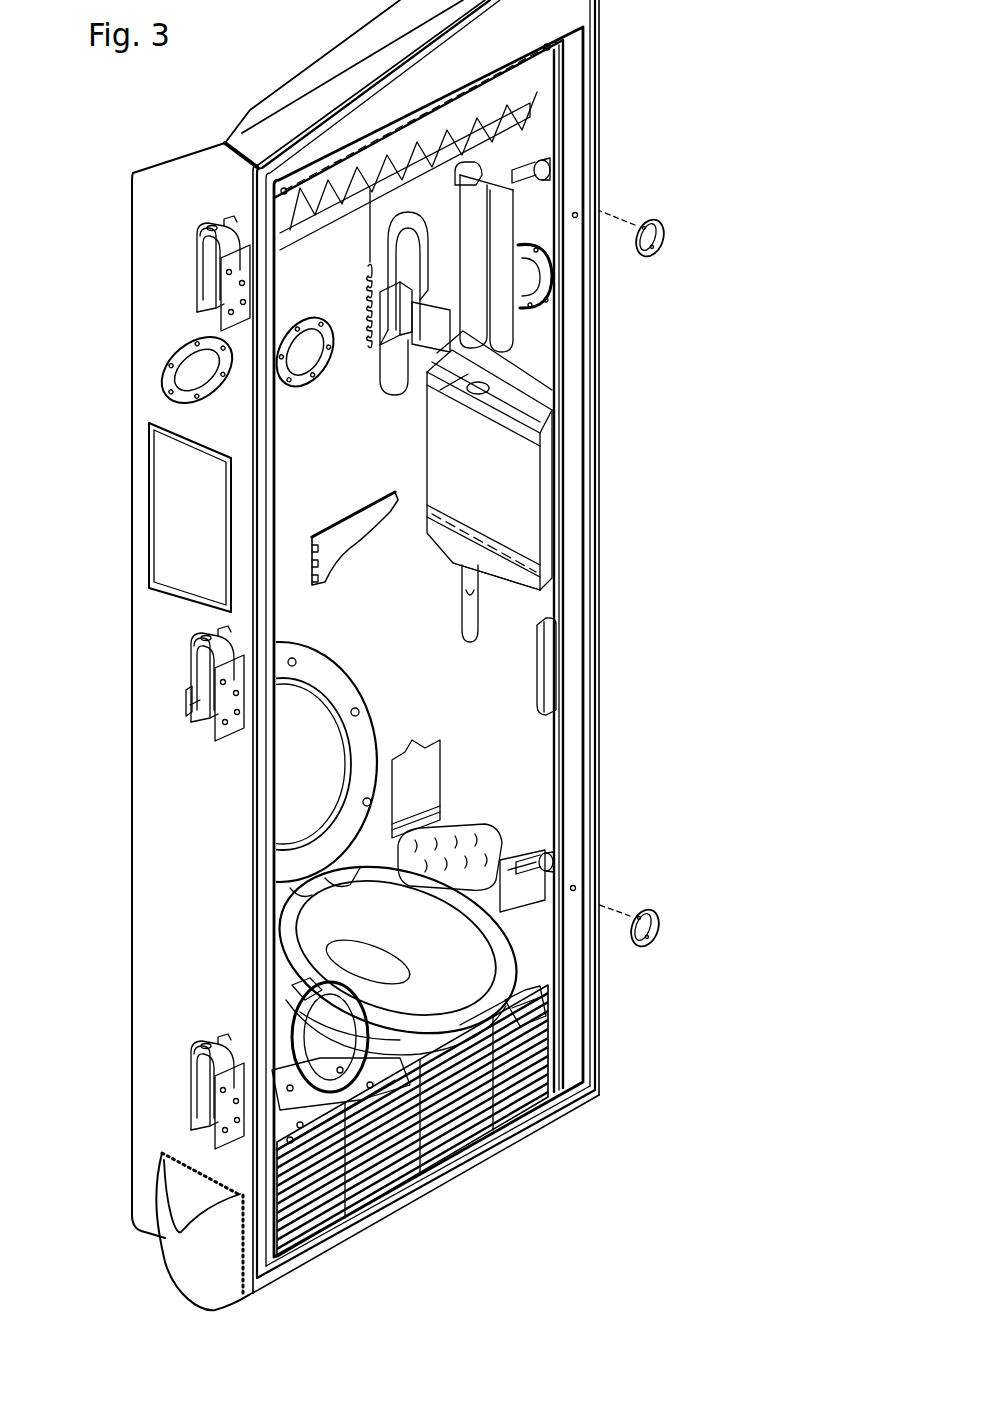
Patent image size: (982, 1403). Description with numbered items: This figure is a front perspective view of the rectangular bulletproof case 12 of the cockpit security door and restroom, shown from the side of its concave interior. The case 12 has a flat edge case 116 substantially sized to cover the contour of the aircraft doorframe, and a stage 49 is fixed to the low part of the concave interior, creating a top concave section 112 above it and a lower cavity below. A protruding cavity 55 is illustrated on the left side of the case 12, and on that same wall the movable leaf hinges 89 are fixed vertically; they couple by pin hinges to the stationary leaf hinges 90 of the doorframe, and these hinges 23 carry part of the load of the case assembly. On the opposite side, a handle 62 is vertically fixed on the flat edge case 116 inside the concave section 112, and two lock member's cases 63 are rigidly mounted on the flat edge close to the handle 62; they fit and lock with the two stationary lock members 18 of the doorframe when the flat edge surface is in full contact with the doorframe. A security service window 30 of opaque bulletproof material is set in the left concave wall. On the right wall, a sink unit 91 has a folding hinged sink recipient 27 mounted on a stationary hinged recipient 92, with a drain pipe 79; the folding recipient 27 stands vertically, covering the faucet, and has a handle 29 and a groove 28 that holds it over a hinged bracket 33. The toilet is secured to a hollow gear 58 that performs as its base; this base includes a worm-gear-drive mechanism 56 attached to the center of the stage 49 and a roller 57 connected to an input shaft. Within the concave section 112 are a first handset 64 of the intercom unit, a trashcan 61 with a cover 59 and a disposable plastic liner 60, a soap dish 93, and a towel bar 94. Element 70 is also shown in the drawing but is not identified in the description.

The rectangular bulletproof case 12 is at (127, 260).
The stationary lock member 18 is at (662, 232).
The hinges 23 is at (186, 712).
The folding hinged sink recipient 27 is at (498, 506).
The groove 28 is at (545, 405).
The handle 29 is at (440, 393).
The security service window 30 is at (185, 512).
The hinged bracket 33 is at (355, 525).
The stage 49 is at (360, 1117).
The protruding cavity 55 is at (195, 1272).
The worm-gear-drive mechanism 56 is at (432, 1060).
The roller 57 is at (520, 1010).
The hollow gear 58 is at (330, 1052).
The cover 59 is at (433, 765).
The disposable plastic liner 60 is at (488, 852).
The trashcan 61 is at (533, 905).
The handle 62 is at (556, 656).
The lock member's case 63 is at (540, 168).
The first handset 64 is at (396, 245).
The toilet bowl 70 is at (482, 1018).
The drain pipe 79 is at (471, 612).
The movable leaf hinges 89 is at (205, 660).
The stationary leaf hinges 90 is at (185, 692).
The sink unit 91 is at (505, 520).
The stationary hinged recipient 92 is at (520, 581).
The soap dish 93 is at (490, 342).
The towel bar 94 is at (470, 178).
The top concave section 112 is at (418, 669).
The flat edge case 116 is at (578, 738).